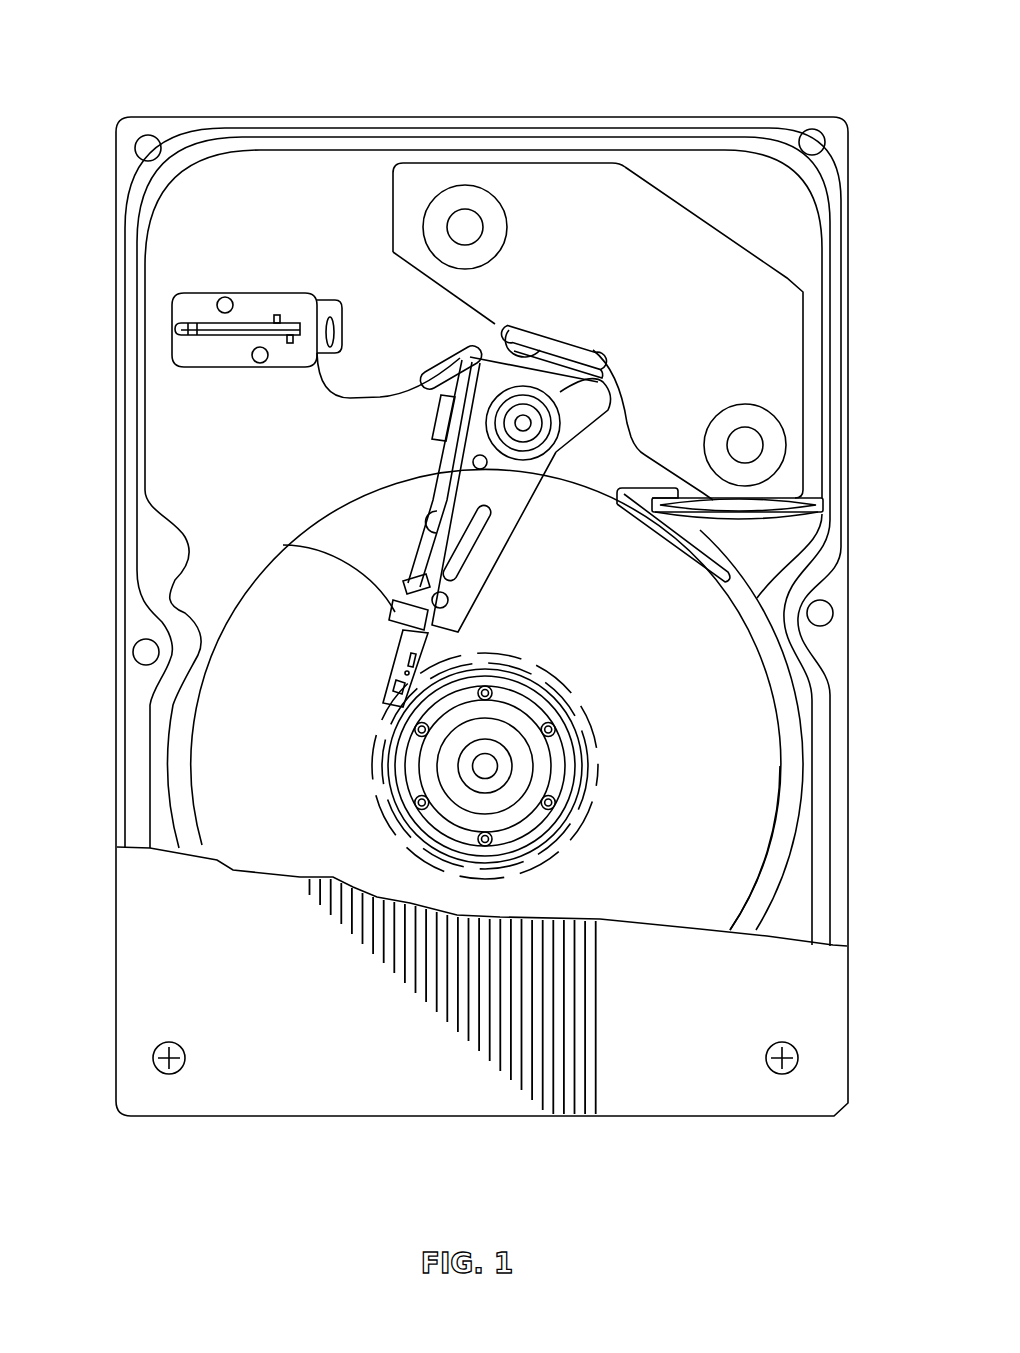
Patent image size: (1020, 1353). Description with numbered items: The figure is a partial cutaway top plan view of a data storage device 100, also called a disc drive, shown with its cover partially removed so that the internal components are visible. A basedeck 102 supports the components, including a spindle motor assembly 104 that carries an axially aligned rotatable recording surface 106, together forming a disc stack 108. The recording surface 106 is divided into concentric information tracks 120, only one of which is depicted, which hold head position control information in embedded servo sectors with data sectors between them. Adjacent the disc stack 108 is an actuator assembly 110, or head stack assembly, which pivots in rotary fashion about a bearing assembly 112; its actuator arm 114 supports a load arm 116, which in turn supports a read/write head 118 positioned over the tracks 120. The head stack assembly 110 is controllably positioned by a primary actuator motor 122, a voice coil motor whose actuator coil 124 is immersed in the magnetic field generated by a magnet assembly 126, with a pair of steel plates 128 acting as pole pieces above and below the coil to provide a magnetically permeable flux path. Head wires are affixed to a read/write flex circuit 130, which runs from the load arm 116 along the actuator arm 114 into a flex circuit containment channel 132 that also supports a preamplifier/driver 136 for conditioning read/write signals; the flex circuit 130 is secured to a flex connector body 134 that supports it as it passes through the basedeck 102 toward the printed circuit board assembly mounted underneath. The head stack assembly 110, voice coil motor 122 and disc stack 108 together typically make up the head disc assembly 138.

The data storage device 100 is at (386, 82).
The basedeck 102 is at (315, 195).
The spindle motor assembly 104 is at (530, 715).
The rotatable recording surface 106 is at (680, 648).
The disc stack 108 is at (784, 784).
The actuator assembly 110 is at (515, 536).
The bearing assembly 112 is at (565, 412).
The actuator arm 114 is at (452, 590).
The load arm 116 is at (398, 655).
The read/write head 118 is at (390, 694).
The information tracks 120 is at (573, 834).
The primary actuator motor 122 is at (792, 280).
The actuator coil 124 is at (525, 334).
The magnet assembly 126 is at (551, 182).
The steel plates 128 is at (777, 368).
The read/write flex circuit 130 is at (340, 394).
The flex circuit containment channel 132 is at (428, 516).
The flex connector body 134 is at (185, 357).
The preamplifier/driver 136 is at (432, 418).
The head disc assembly 138 is at (290, 1118).